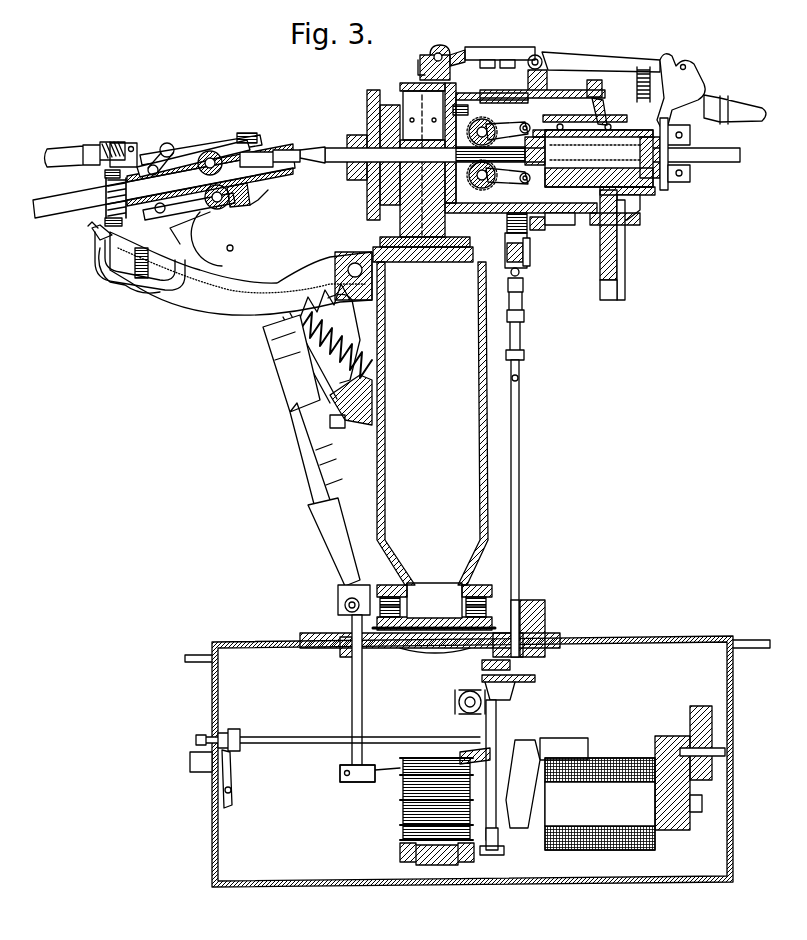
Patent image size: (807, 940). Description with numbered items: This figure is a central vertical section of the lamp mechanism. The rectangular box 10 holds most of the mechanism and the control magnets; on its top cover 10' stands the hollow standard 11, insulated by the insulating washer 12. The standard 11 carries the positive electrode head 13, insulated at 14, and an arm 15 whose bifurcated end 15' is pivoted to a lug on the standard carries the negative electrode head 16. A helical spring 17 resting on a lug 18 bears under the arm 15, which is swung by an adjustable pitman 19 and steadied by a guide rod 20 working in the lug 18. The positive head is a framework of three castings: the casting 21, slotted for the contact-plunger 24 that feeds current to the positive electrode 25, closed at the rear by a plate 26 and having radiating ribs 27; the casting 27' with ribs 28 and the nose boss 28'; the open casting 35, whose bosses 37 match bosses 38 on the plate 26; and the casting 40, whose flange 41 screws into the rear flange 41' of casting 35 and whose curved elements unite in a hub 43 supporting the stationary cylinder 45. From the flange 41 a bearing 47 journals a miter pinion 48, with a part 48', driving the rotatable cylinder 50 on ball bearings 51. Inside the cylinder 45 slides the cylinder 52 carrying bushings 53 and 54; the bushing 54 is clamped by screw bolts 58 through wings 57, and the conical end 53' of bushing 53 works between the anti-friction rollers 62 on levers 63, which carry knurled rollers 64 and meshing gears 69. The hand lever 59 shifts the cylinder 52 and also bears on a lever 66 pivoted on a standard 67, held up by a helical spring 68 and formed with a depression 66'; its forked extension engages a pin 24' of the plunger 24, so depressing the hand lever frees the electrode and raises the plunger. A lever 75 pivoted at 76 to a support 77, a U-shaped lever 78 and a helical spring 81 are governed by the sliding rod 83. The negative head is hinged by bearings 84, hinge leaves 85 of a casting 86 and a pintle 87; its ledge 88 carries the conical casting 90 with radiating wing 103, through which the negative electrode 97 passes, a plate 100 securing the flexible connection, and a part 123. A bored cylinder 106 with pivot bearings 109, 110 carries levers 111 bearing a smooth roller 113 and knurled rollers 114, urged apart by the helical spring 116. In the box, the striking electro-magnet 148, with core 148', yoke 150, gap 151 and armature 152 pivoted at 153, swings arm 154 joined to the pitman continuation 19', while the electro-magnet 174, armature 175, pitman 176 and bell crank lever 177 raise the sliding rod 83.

The rectangular box 10 is at (477, 761).
The top cover 10' is at (606, 626).
The hollow standard 11 is at (434, 429).
The insulating washer 12 is at (485, 627).
The positive electrode head 13 is at (492, 47).
The insulation 14 is at (380, 244).
The arm 15 is at (241, 273).
The bifurcated end 15' is at (337, 276).
The negative electrode head 16 is at (205, 142).
The helical spring 17 is at (345, 325).
The lug 18 is at (365, 415).
The adjustable pitman 19 is at (303, 450).
The pitman continuation 19' is at (366, 683).
The guide rod 20 is at (310, 358).
The casting 21 is at (452, 240).
The contact-plunger 24 is at (416, 105).
The pin 24' is at (431, 52).
The positive electrode 25 is at (330, 150).
The plate 26 is at (452, 95).
The heat-radiating ribs 27 is at (423, 180).
The casting 27' is at (371, 155).
The radiating ribs 28 is at (361, 148).
The boss 28' is at (342, 165).
The casting 35 is at (560, 92).
The boss 37 is at (475, 207).
The bosses 38 is at (465, 98).
The casting 40 is at (627, 205).
The flange 41 is at (605, 82).
The rear end flange 41' is at (590, 75).
The hub 43 is at (645, 190).
The hollow cylinder 45 is at (607, 111).
The bearing 47 is at (600, 236).
The miter pinion 48 is at (625, 235).
The bar end 48' is at (624, 250).
The hollow cylinder 50 is at (580, 119).
The ball bearings 51 is at (612, 124).
The cylinder 52 is at (599, 158).
The bushing 53 is at (535, 151).
The conical end 53' is at (507, 174).
The nut-bushing 54 is at (650, 157).
The wings 57 is at (690, 133).
The screw bolts 58 is at (685, 182).
The hand lever 59 is at (738, 100).
The anti-friction rollers 62 is at (520, 124).
The levers 63 is at (516, 158).
The knurled rollers 64 is at (484, 120).
The lever 66 is at (601, 48).
The depression 66' is at (681, 79).
The standard 67 is at (542, 57).
The helical spring 68 is at (650, 85).
The meshing gears 69 is at (490, 155).
The lever 75 is at (536, 232).
The pivot 76 is at (507, 228).
The support 77 is at (565, 226).
The lever 78 is at (505, 255).
The helical spring 81 is at (530, 255).
The sliding rod 83 is at (520, 374).
The bearings 84 is at (180, 290).
The hinge leaves 85 is at (100, 260).
The casting 86 is at (205, 222).
The pintle 87 is at (92, 232).
The ledge 88 is at (226, 148).
The casting 90 is at (272, 152).
The negative electrode 97 is at (306, 150).
The plate 100 is at (255, 133).
The heat radiating wing 103 is at (258, 210).
The bored cylinder 106 is at (165, 143).
The pivot bearings 109 is at (155, 177).
The pivot bearings 110 is at (165, 213).
The levers 111 is at (182, 165).
The smooth roller 113 is at (236, 198).
The knurled rollers 114 is at (212, 151).
The helical spring 116 is at (106, 190).
The spring 123 is at (135, 275).
The striking electro-magnet 148 is at (600, 813).
The cylindrical core 148' is at (600, 804).
The L-shaped yoke 150 is at (564, 749).
The non-magnetic gap 151 is at (660, 830).
The swinging armature 152 is at (522, 784).
The pivot 153 is at (534, 748).
The arm 154 is at (385, 785).
The electro-magnet 174 is at (402, 830).
The armature 175 is at (455, 860).
The pitman 176 is at (498, 735).
The bell crank lever 177 is at (512, 682).